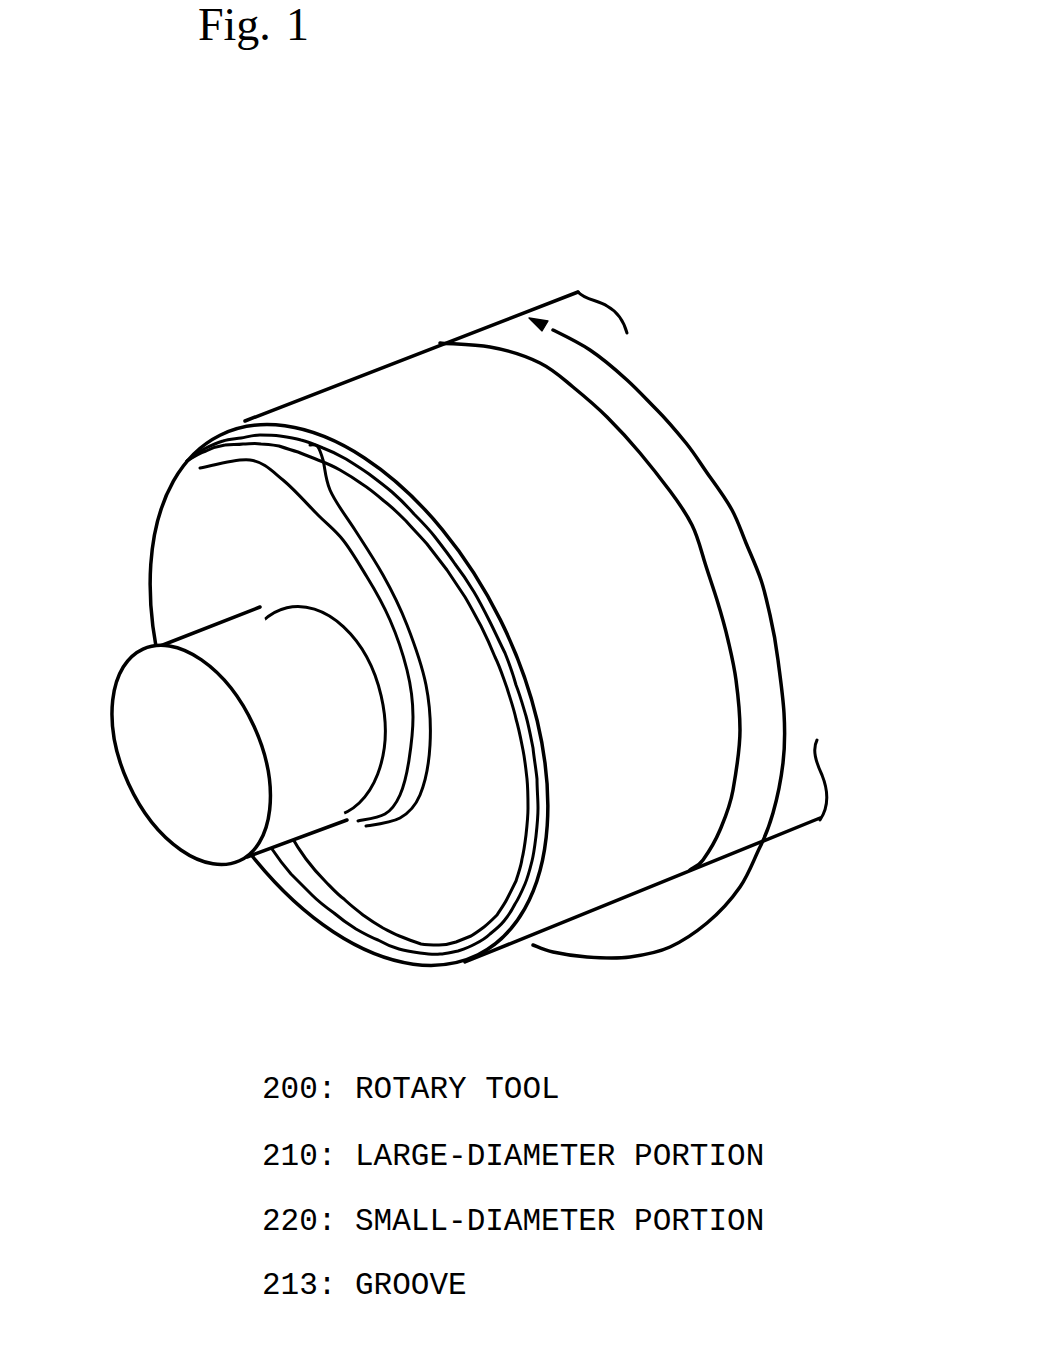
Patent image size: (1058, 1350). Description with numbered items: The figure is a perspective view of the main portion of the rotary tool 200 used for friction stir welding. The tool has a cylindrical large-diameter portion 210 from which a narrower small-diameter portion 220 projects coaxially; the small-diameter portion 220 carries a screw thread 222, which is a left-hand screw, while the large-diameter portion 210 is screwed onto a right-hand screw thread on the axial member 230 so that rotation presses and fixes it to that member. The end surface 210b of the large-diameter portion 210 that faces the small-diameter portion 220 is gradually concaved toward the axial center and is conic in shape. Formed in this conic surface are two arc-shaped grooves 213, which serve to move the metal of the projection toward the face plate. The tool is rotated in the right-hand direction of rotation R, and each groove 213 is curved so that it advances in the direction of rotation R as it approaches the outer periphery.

The rotary tool 200 is at (444, 216).
The large-diameter portion 210 is at (384, 395).
The end surface of the large-diameter portion 210b is at (201, 523).
The groove 213 is at (268, 460).
The small-diameter portion 220 is at (158, 765).
The screw thread 222 is at (218, 632).
The axial member 230 is at (563, 313).
The direction of rotation R is at (657, 638).